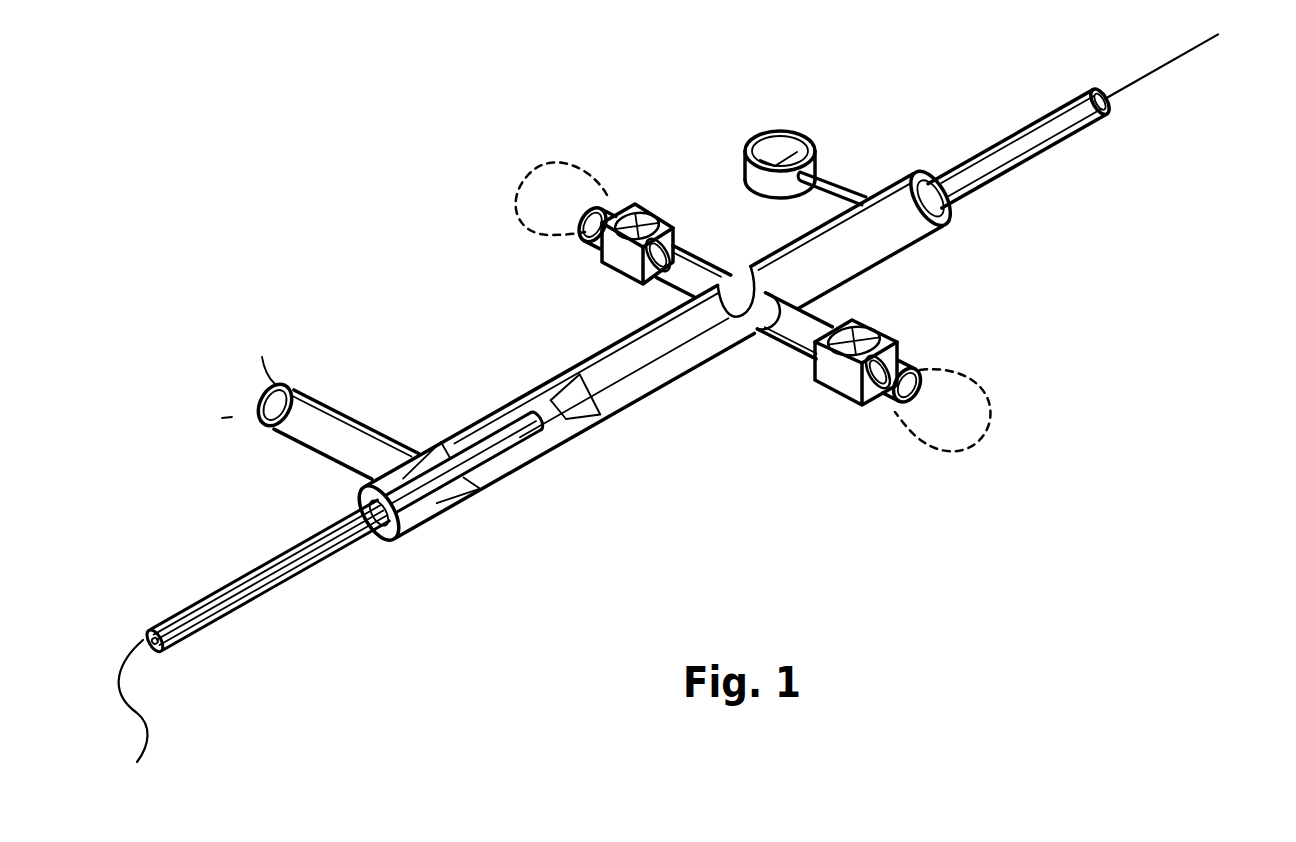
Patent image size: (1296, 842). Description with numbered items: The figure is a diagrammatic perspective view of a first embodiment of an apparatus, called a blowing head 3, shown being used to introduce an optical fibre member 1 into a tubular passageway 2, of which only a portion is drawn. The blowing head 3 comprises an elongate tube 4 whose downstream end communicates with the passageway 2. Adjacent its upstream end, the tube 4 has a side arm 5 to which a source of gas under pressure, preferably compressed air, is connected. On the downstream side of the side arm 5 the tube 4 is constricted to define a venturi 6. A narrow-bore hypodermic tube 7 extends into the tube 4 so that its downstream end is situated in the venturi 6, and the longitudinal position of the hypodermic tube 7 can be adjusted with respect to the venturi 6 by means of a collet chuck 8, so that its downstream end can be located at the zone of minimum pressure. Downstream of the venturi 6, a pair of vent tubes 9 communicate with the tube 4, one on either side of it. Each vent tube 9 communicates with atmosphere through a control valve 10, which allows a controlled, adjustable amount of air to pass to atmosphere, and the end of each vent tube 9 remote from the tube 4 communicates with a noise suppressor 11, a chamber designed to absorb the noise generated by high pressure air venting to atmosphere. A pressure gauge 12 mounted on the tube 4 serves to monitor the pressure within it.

The optical fibre member 1 is at (1162, 65).
The tubular passageway 2 is at (1028, 158).
The blowing head 3 is at (494, 372).
The elongate tube 4 is at (668, 383).
The side arm 5 is at (318, 398).
The venturi 6 is at (553, 438).
The hypodermic tube 7 is at (280, 590).
The collet chuck 8 is at (398, 527).
The vent tube 9 is at (672, 276).
The control valve 10 is at (655, 228).
The noise suppressor 11 is at (553, 178).
The pressure gauge 12 is at (788, 137).